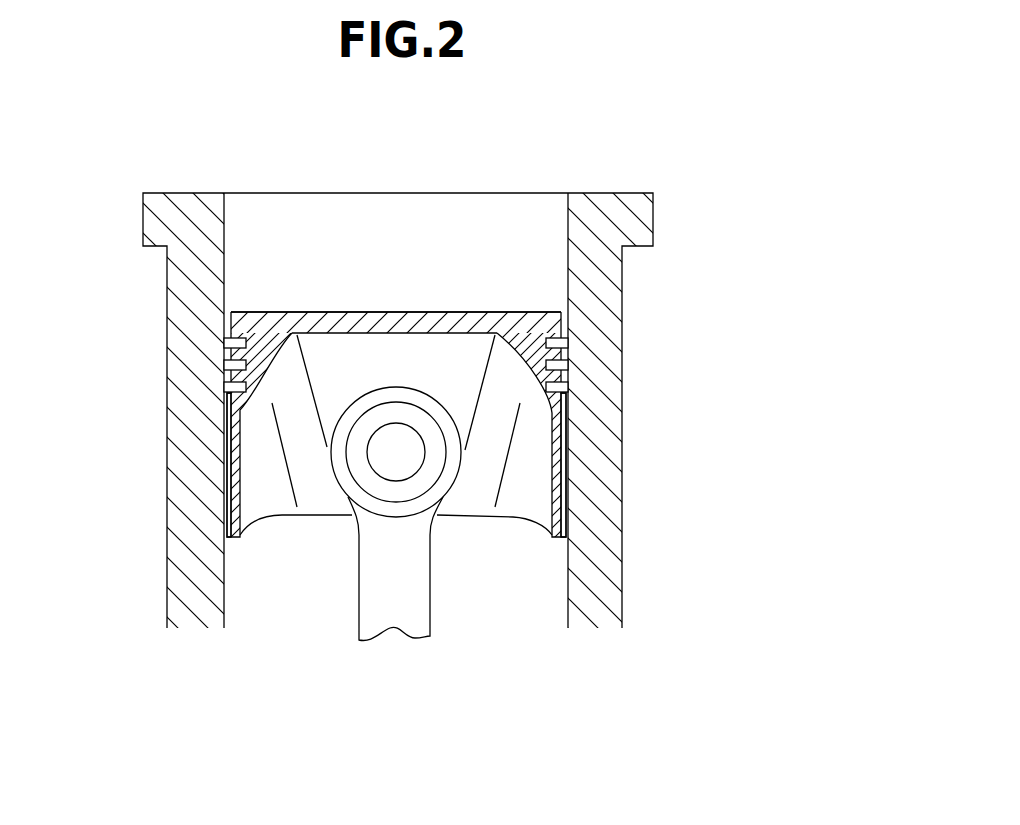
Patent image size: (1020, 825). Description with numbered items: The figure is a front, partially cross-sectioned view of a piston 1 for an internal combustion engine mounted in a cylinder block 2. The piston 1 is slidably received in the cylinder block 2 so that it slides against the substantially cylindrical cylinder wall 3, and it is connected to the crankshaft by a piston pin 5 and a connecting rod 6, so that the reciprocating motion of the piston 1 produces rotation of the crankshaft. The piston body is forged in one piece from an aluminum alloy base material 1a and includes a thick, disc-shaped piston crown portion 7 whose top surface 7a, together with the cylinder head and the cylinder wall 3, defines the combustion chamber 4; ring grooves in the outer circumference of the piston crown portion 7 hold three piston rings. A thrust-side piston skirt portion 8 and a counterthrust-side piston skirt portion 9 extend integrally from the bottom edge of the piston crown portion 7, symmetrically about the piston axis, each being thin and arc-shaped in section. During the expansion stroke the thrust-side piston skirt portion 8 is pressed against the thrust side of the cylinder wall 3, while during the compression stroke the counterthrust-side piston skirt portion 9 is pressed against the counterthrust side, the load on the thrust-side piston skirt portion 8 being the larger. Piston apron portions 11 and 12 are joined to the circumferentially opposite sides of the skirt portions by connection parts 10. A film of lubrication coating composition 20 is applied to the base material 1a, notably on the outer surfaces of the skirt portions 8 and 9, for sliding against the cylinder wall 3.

The piston 1 is at (394, 387).
The base material 1a is at (566, 440).
The cylinder block 2 is at (603, 542).
The cylinder wall 3 is at (558, 422).
The combustion chamber 4 is at (480, 218).
The piston pin 5 is at (430, 470).
The connecting rod 6 is at (365, 610).
The piston crown portion 7 is at (396, 233).
The top surface 7a is at (407, 312).
The thrust-side piston skirt portion 8 is at (233, 477).
The counterthrust-side piston skirt portion 9 is at (558, 492).
The connection part 10 is at (530, 497).
The piston apron portion 11 is at (285, 498).
The piston apron portion 12 is at (300, 483).
The lubrication coating composition 20 is at (224, 440).